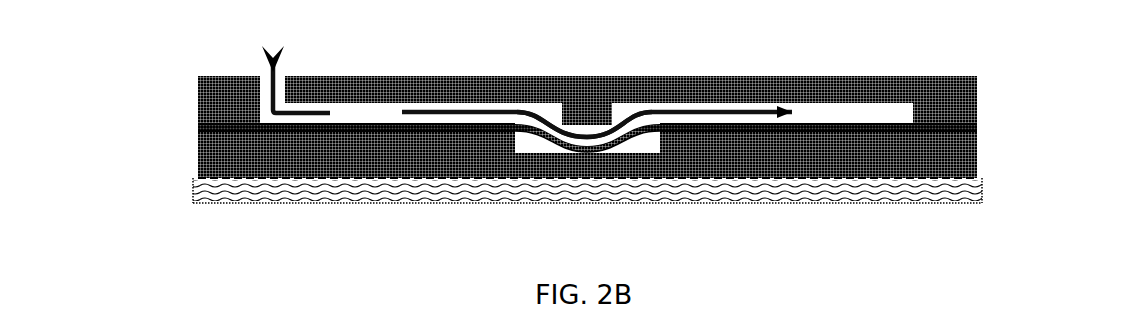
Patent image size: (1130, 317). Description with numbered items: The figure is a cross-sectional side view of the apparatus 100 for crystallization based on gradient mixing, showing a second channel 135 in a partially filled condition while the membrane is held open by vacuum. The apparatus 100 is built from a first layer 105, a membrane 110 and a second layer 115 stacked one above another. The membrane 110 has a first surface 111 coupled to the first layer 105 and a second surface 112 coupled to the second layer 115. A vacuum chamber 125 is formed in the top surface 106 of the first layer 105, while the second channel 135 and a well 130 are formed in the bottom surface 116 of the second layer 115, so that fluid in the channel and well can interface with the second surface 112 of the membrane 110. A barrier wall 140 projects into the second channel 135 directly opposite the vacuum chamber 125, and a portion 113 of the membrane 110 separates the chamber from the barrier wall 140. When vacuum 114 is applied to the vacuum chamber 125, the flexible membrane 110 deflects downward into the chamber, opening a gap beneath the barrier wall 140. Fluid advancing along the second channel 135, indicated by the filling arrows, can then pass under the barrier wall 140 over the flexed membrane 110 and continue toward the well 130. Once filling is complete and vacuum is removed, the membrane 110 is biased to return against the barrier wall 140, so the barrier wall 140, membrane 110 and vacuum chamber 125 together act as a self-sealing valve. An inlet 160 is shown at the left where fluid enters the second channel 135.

The apparatus 100 is at (148, 68).
The first layer 105 is at (982, 163).
The top surface of the first layer 106 is at (925, 130).
The membrane 110 is at (979, 131).
The first surface of the membrane 111 is at (290, 133).
The second surface of the membrane 112 is at (888, 123).
The portion of the membrane 113 is at (622, 147).
The vacuum 114 is at (648, 150).
The second layer 115 is at (979, 100).
The bottom surface of the second layer 116 is at (210, 125).
The vacuum chamber 125 is at (660, 135).
The well 130 is at (837, 117).
The second channel 135 is at (395, 116).
The barrier wall 140 is at (588, 113).
The inlet 160 is at (262, 76).